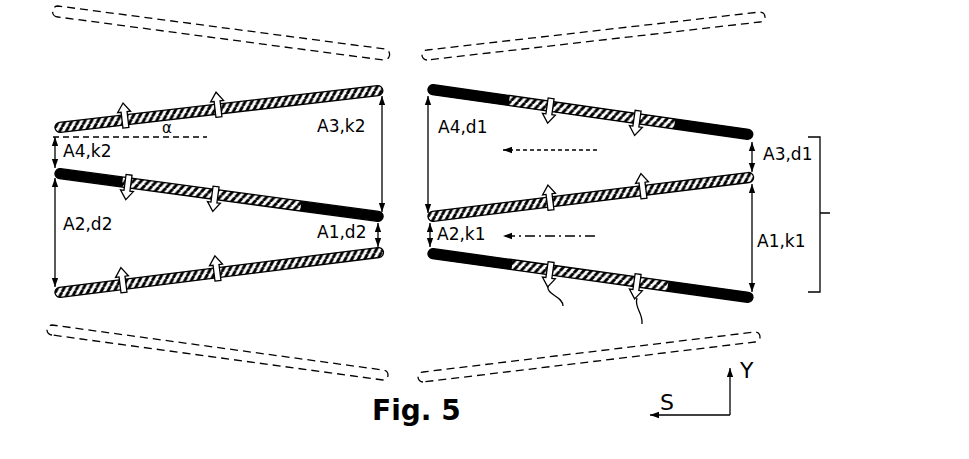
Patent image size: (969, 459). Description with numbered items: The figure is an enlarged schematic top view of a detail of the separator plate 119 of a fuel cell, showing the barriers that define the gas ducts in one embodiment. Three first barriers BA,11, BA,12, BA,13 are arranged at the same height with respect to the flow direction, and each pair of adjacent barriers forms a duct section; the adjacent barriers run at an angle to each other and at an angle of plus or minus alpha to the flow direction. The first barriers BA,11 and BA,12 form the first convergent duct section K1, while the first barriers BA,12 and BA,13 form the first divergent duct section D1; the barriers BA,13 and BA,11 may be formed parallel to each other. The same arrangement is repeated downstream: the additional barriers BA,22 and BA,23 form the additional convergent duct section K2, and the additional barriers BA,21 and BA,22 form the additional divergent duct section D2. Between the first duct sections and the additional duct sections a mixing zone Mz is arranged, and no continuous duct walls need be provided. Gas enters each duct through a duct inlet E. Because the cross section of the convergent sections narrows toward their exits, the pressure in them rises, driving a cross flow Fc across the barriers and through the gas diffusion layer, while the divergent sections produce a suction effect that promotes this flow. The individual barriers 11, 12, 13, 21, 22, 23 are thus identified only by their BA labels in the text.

The separator plate 119 is at (778, 65).
The additional barrier BA,23 is at (218, 96).
The additional barrier BA,22 is at (218, 194).
The additional barrier BA,21 is at (219, 281).
The first barrier BA,13 is at (590, 110).
The first barrier BA,12 is at (590, 186).
The first barrier BA,11 is at (590, 289).
The blade 23 is at (277, 99).
The blade 22 is at (298, 205).
The blade 21 is at (312, 262).
The blade 13 is at (670, 120).
The blade 12 is at (685, 169).
The blade 11 is at (690, 295).
The cross flow Fc is at (602, 316).
The first convergent duct section K1 is at (641, 233).
The additional convergent duct section K2 is at (237, 155).
The first divergent duct section D1 is at (640, 158).
The additional divergent duct section D2 is at (237, 238).
The duct inlet E is at (828, 214).
The mixing zone Mz is at (422, 158).